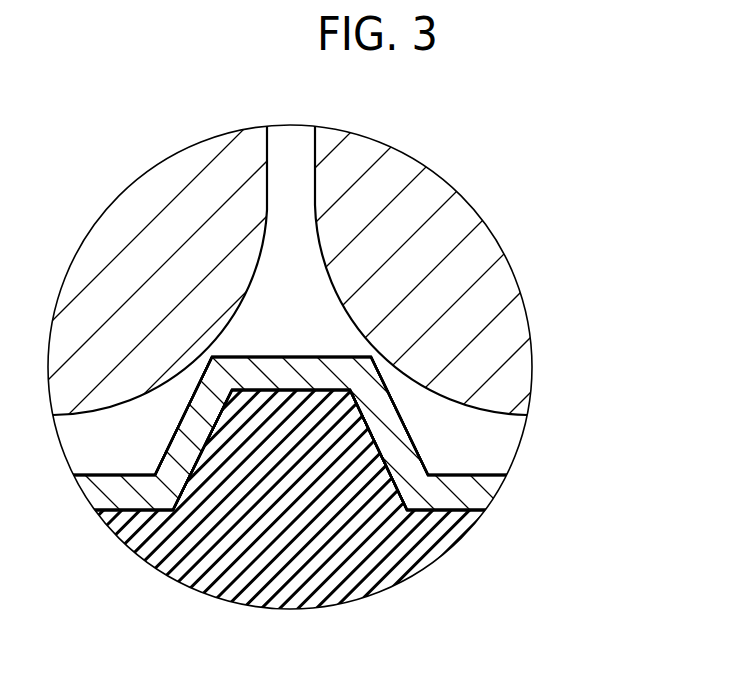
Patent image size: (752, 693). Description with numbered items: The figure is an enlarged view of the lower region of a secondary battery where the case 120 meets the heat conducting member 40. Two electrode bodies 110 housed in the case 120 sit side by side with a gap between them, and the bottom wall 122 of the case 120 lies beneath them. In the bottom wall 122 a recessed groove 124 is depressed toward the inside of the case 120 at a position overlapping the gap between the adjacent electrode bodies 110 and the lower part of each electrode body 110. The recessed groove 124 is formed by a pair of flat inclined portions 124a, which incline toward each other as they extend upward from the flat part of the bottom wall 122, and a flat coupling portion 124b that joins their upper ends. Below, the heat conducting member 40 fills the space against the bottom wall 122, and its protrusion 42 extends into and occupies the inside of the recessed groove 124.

The electrode body 110 is at (157, 203).
The case 120 is at (657, 335).
The bottom wall 122 is at (476, 490).
The recessed groove 124 is at (609, 298).
The inclined portion 124a is at (387, 430).
The coupling portion 124b is at (297, 373).
The heat conducting member 40 is at (442, 527).
The protrusion 42 is at (302, 458).